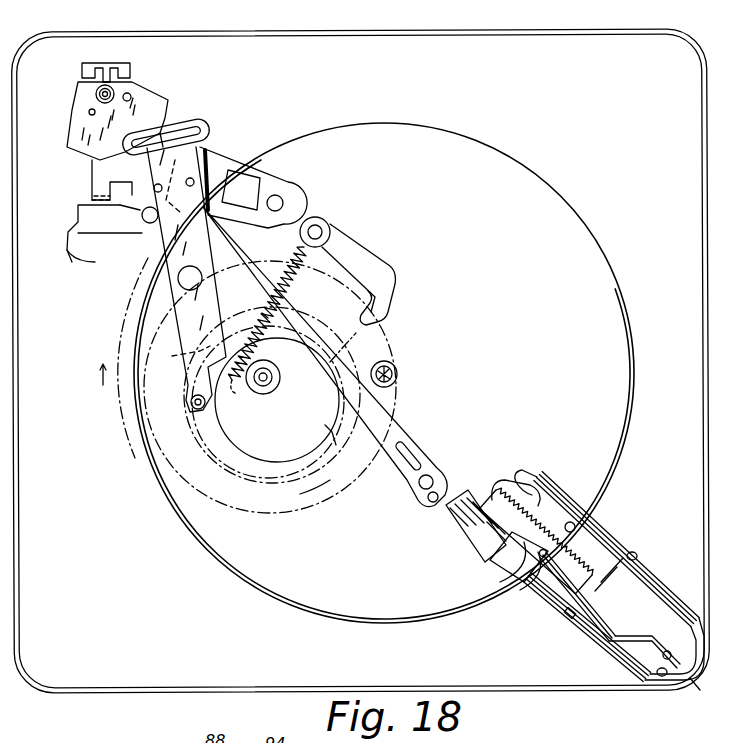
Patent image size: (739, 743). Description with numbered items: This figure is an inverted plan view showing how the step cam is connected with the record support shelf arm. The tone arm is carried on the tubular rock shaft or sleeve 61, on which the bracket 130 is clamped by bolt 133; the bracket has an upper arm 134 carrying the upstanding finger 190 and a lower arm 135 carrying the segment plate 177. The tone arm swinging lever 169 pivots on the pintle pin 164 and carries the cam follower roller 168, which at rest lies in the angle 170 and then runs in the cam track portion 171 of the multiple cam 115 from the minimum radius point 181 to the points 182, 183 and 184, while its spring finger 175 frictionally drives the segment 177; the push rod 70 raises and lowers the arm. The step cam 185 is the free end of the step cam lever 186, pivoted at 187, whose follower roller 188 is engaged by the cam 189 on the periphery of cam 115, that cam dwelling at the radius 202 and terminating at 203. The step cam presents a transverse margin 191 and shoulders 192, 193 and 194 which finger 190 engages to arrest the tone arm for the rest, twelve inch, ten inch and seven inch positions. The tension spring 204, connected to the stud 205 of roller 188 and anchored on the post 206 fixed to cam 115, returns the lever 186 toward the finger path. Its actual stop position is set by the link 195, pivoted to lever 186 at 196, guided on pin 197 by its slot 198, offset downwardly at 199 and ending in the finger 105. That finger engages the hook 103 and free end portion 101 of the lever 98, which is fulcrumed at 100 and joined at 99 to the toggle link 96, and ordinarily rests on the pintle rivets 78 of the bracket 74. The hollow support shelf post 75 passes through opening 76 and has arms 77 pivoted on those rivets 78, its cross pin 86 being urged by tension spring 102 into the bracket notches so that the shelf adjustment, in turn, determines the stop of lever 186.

The sleeve 61 is at (96, 95).
The push rod 70 is at (99, 100).
The bracket 74 is at (594, 526).
The support shelf post 75 is at (618, 658).
The opening 76 is at (684, 598).
The arms 77 is at (606, 546).
The pintle rivets 78 is at (535, 478).
The cross pin 86 is at (637, 556).
The toggle link 96 is at (704, 682).
The lever 98 is at (562, 612).
The pivotal connection 99 is at (664, 678).
The fulcrum support 100 is at (590, 632).
The free end portion 101 is at (490, 496).
The tension spring 102 is at (579, 570).
The hook 103 is at (505, 566).
The finger 105 is at (520, 582).
The multiple cam 115 is at (392, 360).
The bracket 130 is at (120, 62).
The bolt 133 is at (82, 70).
The upper arm 134 is at (95, 170).
The lower arm 135 is at (136, 85).
The pintle pin 164 is at (178, 280).
The cam follower roller 168 is at (190, 412).
The tone arm swinging lever 169 is at (180, 310).
The angle 170 is at (326, 430).
The cam track portion 171 is at (351, 347).
The spring finger 175 is at (206, 125).
The segment plate 177 is at (152, 106).
The minimum radius point 181 is at (249, 323).
The point 182 is at (178, 356).
The point 183 is at (240, 464).
The point 184 is at (290, 480).
The step cam 185 is at (134, 224).
The step cam lever 186 is at (300, 190).
The pivot 187 is at (280, 203).
The cam follower roller 188 is at (330, 232).
The cam 189 is at (260, 513).
The finger 190 is at (92, 200).
The transverse margin 191 is at (70, 255).
The shoulder 192 is at (80, 218).
The shoulder 193 is at (110, 219).
The shoulder 194 is at (139, 206).
The link 195 is at (216, 232).
The pivot 196 is at (152, 248).
The guide pin 197 is at (430, 478).
The slot 198 is at (430, 502).
The offset 199 is at (460, 522).
The dwell radius 202 is at (130, 441).
The termination point 203 is at (312, 502).
The tension spring 204 is at (298, 276).
The stud 205 is at (320, 235).
The post 206 is at (254, 388).